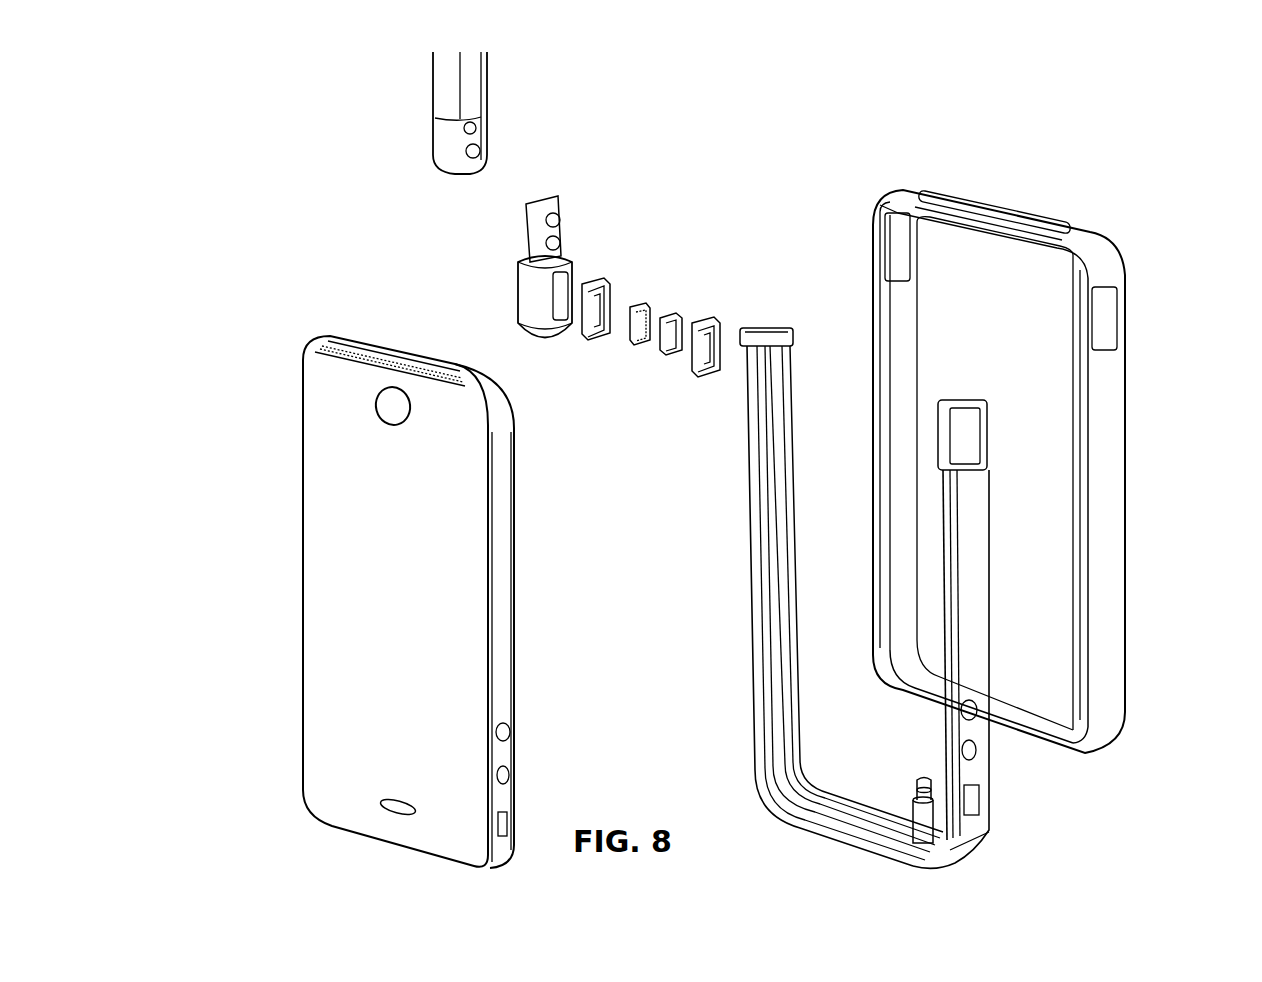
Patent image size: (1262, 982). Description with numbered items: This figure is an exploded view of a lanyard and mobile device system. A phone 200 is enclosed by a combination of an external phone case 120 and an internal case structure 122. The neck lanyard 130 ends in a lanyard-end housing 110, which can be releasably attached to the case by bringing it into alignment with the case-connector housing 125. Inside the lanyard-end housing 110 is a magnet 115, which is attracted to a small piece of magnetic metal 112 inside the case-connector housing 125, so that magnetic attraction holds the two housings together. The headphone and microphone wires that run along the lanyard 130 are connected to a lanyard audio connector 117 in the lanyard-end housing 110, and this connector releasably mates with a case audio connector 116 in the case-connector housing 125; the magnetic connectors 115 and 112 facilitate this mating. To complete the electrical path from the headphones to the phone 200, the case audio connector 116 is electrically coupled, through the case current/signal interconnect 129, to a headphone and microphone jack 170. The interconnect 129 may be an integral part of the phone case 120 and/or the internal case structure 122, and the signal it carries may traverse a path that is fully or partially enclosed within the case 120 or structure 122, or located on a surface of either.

The lanyard-end housing 110 is at (530, 297).
The magnetic metal piece 112 is at (703, 322).
The magnet 115 is at (588, 322).
The case audio connector 116 is at (660, 347).
The lanyard audio connector 117 is at (640, 307).
The phone case 120 is at (1110, 512).
The internal case structure 122 is at (970, 833).
The case-connector housing 125 is at (742, 392).
The case current/signal interconnect 129 is at (750, 500).
The neck lanyard 130 is at (437, 94).
The headphone and microphone jack 170 is at (925, 820).
The phone 200 is at (345, 487).